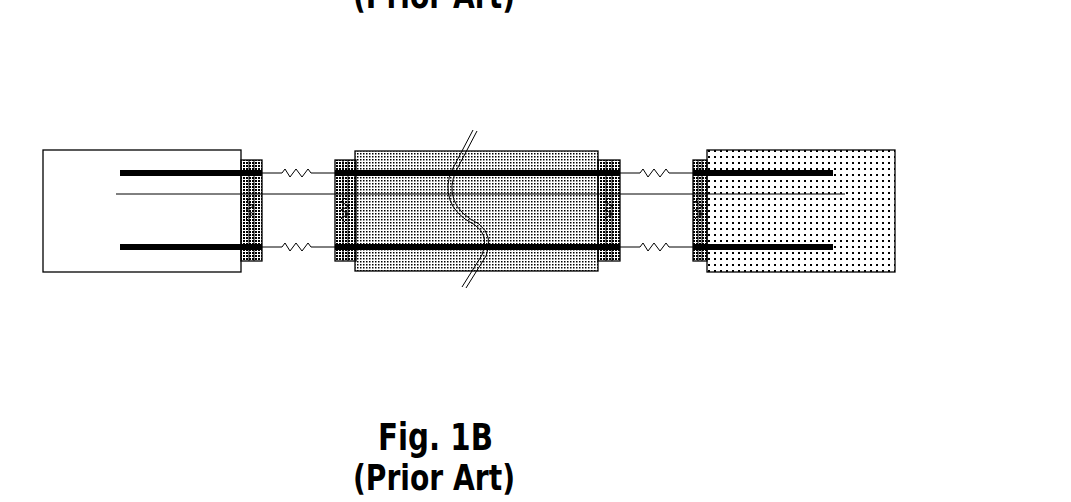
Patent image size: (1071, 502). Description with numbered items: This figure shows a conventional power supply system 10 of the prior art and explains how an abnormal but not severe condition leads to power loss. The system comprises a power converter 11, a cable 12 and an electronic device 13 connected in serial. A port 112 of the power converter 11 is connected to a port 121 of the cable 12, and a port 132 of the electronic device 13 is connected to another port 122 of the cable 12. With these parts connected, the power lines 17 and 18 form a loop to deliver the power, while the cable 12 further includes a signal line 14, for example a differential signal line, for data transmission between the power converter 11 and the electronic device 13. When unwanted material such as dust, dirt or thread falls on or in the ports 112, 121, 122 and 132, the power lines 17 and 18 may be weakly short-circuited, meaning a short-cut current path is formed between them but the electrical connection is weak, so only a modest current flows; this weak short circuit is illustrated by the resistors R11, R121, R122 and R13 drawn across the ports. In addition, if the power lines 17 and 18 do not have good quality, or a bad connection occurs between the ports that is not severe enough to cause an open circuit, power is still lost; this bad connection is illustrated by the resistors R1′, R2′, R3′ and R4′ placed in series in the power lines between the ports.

The conventional power supply system 10 is at (747, 68).
The power converter 11 is at (95, 150).
The cable 12 is at (394, 151).
The electronic device 13 is at (727, 150).
The signal line 14 is at (488, 196).
The power line 17 is at (513, 171).
The power line 18 is at (424, 252).
The port 112 is at (258, 262).
The port 121 is at (345, 262).
The port 122 is at (608, 262).
The port 132 is at (696, 262).
The resistor R11 is at (248, 210).
The resistor R121 is at (346, 212).
The resistor R122 is at (608, 210).
The resistor R13 is at (704, 216).
The resistor R1′ is at (298, 161).
The resistor R2′ is at (298, 236).
The resistor R3′ is at (656, 162).
The resistor R4′ is at (656, 236).